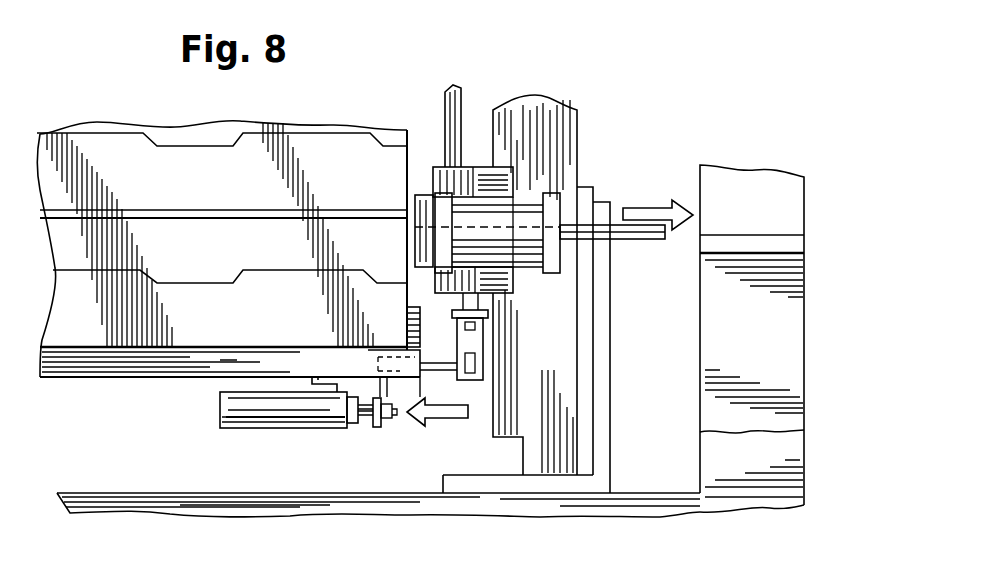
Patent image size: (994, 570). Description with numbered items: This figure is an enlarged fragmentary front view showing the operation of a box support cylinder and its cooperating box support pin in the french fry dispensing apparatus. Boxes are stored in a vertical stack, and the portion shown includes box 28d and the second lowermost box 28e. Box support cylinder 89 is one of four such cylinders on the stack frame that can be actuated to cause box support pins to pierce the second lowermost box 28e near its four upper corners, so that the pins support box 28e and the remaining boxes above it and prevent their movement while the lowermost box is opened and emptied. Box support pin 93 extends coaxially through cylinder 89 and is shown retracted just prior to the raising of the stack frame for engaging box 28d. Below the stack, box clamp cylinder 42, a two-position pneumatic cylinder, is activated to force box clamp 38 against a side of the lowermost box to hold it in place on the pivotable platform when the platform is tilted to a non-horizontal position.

The box 28d is at (234, 196).
The second lowermost box 28e is at (247, 329).
The box clamp 38 is at (420, 333).
The box clamp cylinder 42 is at (257, 417).
The box support cylinder 89 is at (530, 220).
The box support pin 93 is at (613, 227).